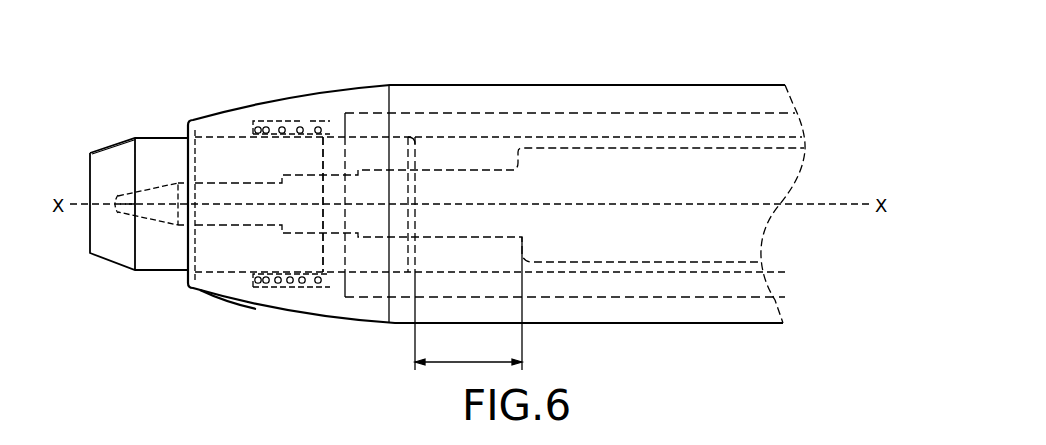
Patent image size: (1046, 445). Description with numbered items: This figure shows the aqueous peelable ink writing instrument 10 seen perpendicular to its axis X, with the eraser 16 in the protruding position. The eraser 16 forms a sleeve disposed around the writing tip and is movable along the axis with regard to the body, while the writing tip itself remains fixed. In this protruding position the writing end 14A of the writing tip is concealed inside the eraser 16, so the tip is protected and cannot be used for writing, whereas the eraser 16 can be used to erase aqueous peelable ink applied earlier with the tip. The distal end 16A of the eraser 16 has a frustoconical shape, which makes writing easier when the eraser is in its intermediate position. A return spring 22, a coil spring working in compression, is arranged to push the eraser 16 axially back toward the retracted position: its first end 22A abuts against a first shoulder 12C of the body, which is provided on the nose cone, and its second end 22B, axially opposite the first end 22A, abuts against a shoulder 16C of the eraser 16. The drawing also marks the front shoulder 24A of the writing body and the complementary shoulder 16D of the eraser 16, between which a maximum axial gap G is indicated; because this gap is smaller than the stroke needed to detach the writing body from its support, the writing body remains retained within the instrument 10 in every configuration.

The aqueous peelable ink writing instrument 10 is at (670, 71).
The first shoulder of the body 12C is at (250, 285).
The writing end 14A is at (115, 202).
The eraser 16 is at (161, 163).
The distal end of the eraser 16A is at (106, 148).
The shoulder of the eraser 16C is at (333, 282).
The complementary shoulder of the eraser 16D is at (420, 150).
The return spring 22 is at (284, 122).
The first end of the return spring 22A is at (268, 285).
The second end of the return spring 22B is at (315, 285).
The front shoulder of the writing body 24A is at (517, 163).